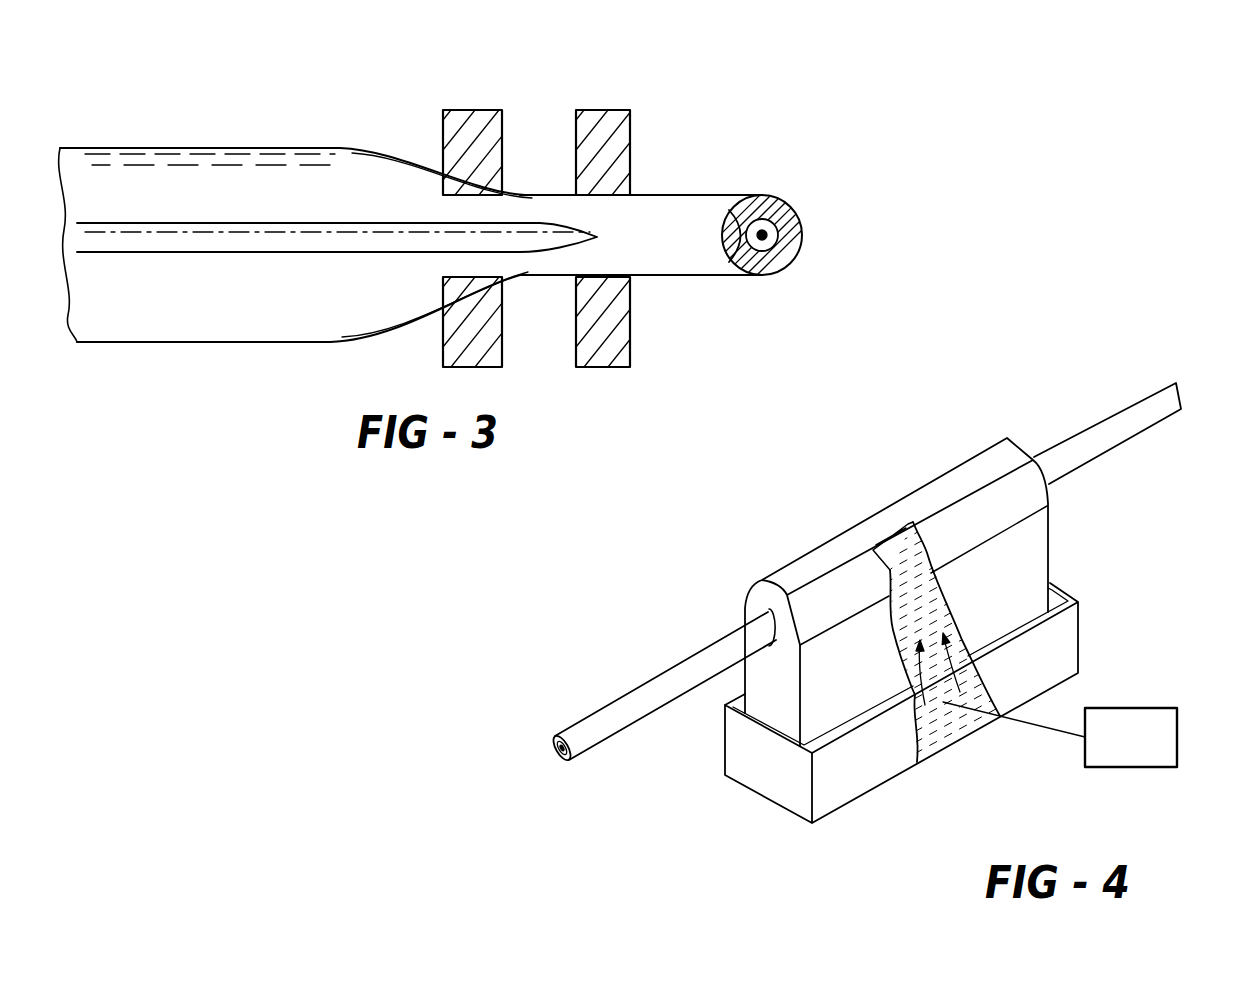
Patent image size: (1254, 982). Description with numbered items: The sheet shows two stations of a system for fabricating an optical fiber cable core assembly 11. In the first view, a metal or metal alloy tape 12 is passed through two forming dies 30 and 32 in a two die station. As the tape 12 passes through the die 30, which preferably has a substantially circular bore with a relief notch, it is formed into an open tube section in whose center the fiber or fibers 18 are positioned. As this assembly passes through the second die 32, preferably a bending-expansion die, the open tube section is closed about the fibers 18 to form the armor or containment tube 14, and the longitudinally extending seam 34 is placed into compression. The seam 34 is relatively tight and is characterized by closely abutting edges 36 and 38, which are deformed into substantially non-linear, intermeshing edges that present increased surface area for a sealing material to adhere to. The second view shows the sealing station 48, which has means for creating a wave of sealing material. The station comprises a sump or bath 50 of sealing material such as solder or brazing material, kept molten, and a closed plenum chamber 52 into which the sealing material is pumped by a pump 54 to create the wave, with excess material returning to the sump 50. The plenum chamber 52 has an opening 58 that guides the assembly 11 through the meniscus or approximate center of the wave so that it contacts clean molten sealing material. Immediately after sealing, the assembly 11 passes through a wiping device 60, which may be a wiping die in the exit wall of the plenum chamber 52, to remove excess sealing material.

In FIG. 4, the optical fiber cable core assembly 11 is at (650, 660).
In FIG. 3, the metal or metal alloy tape 12 is at (138, 167).
In FIG. 3, the armor or containment tube 14 is at (675, 210).
In FIG. 3, the optical fiber 18 is at (252, 238).
In FIG. 3, the forming die 30 is at (475, 118).
In FIG. 3, the forming die 32 is at (601, 118).
In FIG. 3, the seam 34 is at (675, 240).
In FIG. 3, the edge 36 is at (733, 207).
In FIG. 3, the edge 38 is at (730, 250).
In FIG. 4, the sealing station 48 is at (1152, 610).
In FIG. 4, the sump or bath 50 is at (948, 728).
In FIG. 4, the closed plenum chamber 52 is at (1042, 530).
In FIG. 4, the pump 54 is at (1168, 733).
In FIG. 4, the opening 58 is at (752, 612).
In FIG. 4, the wiping device 60 is at (1038, 458).